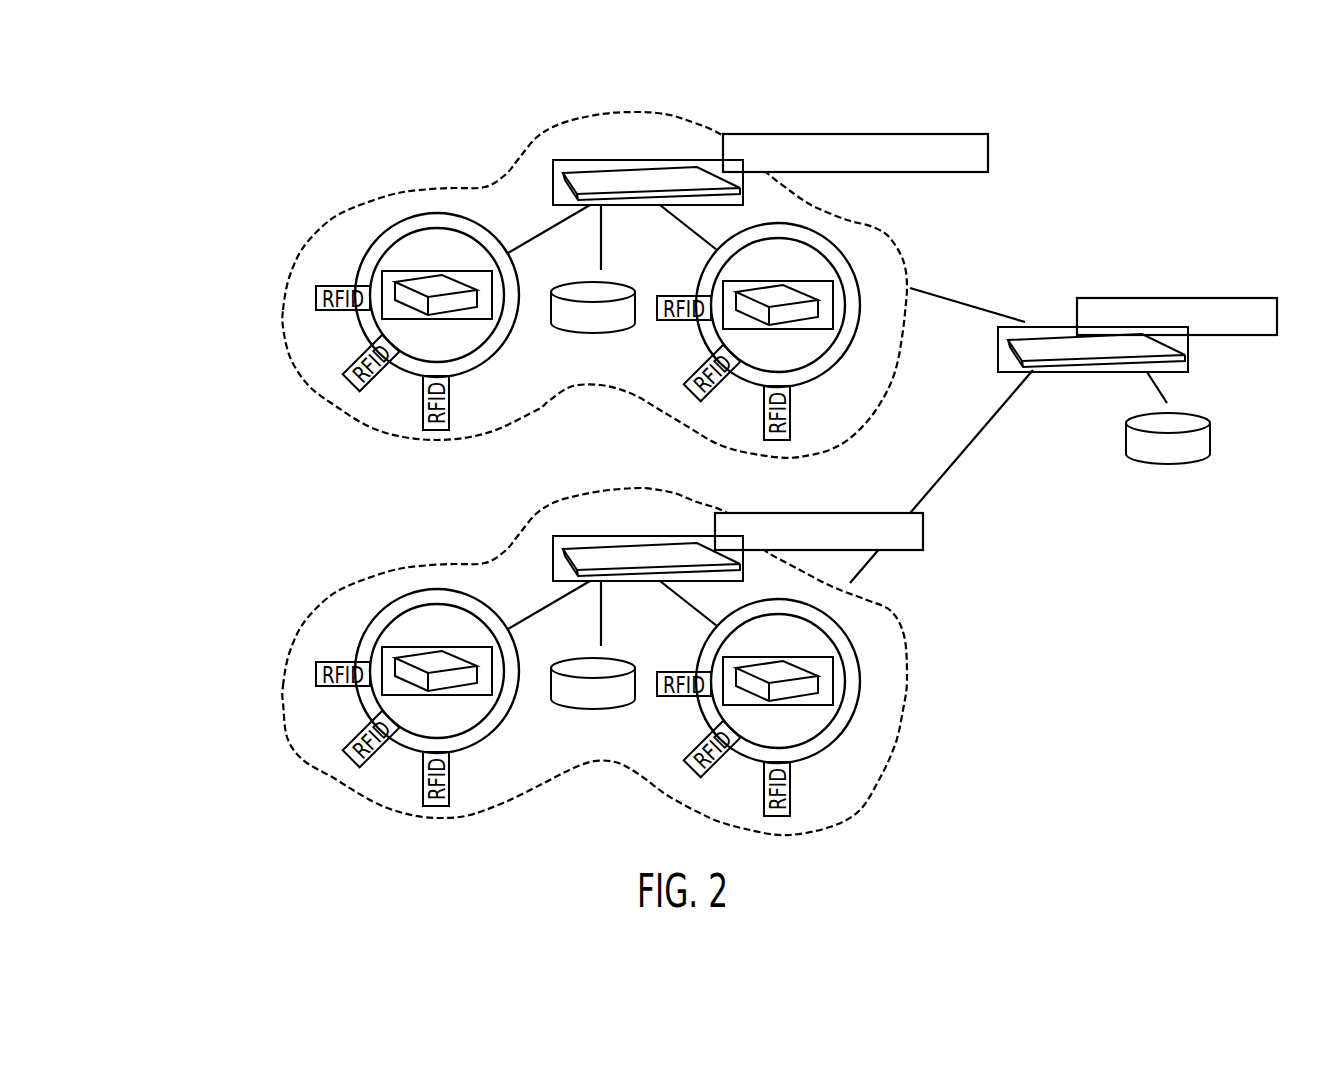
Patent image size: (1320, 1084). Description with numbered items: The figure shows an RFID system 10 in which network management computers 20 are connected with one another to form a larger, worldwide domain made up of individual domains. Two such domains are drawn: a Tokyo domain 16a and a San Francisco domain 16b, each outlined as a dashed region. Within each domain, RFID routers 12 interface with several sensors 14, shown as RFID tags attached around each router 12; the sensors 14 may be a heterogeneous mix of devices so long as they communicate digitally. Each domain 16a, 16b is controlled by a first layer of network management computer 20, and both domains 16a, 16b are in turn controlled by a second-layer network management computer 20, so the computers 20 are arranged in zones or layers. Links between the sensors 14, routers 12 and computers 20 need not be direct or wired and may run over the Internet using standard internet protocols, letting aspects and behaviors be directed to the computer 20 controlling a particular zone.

The RFID system 10 is at (186, 106).
The RFID router 12 is at (436, 283).
The sensor 14 is at (422, 413).
The Tokyo domain 16a is at (547, 512).
The San Francisco domain 16b is at (553, 132).
The network management computer 20 is at (648, 182).